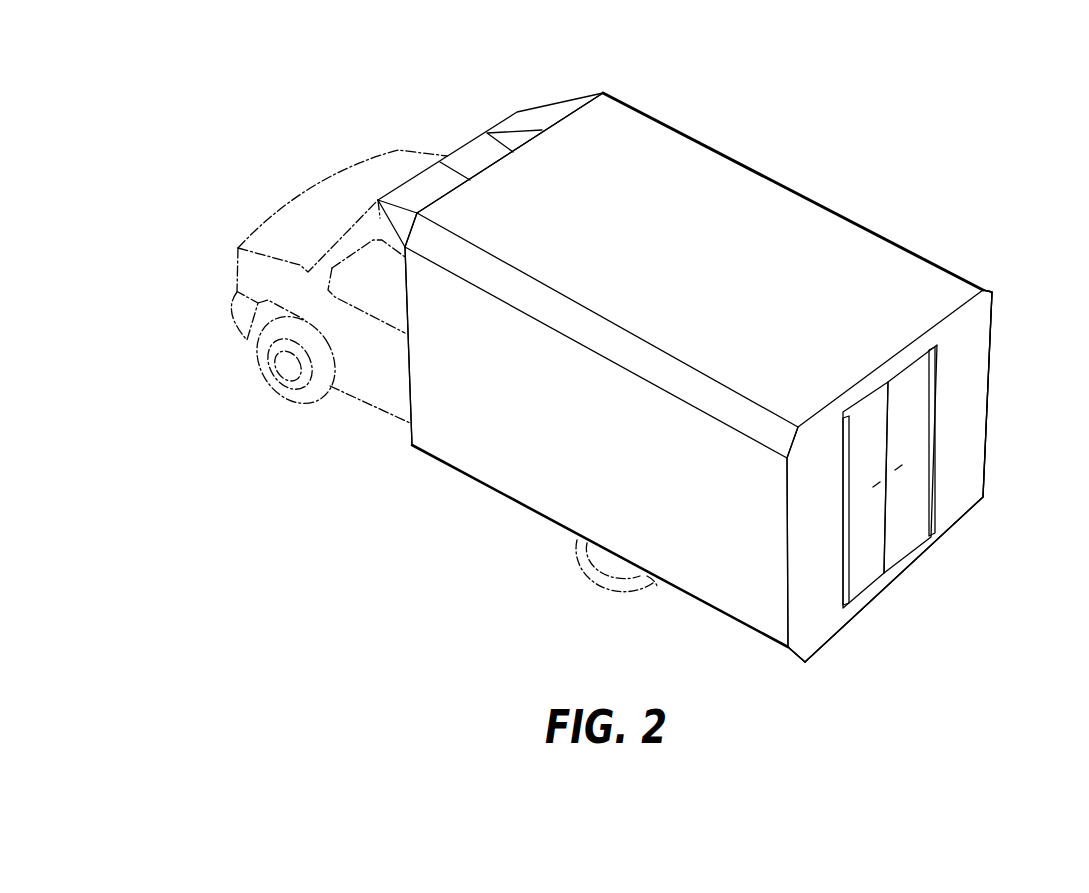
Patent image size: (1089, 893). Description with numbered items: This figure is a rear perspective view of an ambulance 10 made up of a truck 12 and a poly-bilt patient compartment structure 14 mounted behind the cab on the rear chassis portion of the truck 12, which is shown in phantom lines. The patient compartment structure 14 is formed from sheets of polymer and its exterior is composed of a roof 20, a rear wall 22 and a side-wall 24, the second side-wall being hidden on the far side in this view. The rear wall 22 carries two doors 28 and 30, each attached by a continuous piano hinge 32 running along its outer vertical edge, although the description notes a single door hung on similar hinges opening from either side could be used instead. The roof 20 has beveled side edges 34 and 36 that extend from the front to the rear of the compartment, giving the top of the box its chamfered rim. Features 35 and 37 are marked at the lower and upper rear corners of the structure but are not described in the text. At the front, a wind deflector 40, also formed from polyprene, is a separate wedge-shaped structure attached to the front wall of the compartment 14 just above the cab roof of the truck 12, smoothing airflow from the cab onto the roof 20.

The ambulance 10 is at (876, 167).
The truck 12 is at (234, 267).
The poly-bilt patient compartment structure 14 is at (998, 308).
The roof 20 is at (707, 283).
The rear wall 22 is at (967, 498).
The side-wall 24 is at (585, 401).
The door 28 is at (860, 578).
The door 30 is at (903, 543).
The continuous piano hinges 32 is at (936, 395).
The beveled side edge 34 is at (680, 376).
The lower rear corner 35 is at (788, 660).
The beveled side edge 36 is at (984, 289).
The rear vertical edge 37 is at (978, 505).
The wind deflector 40 is at (546, 114).